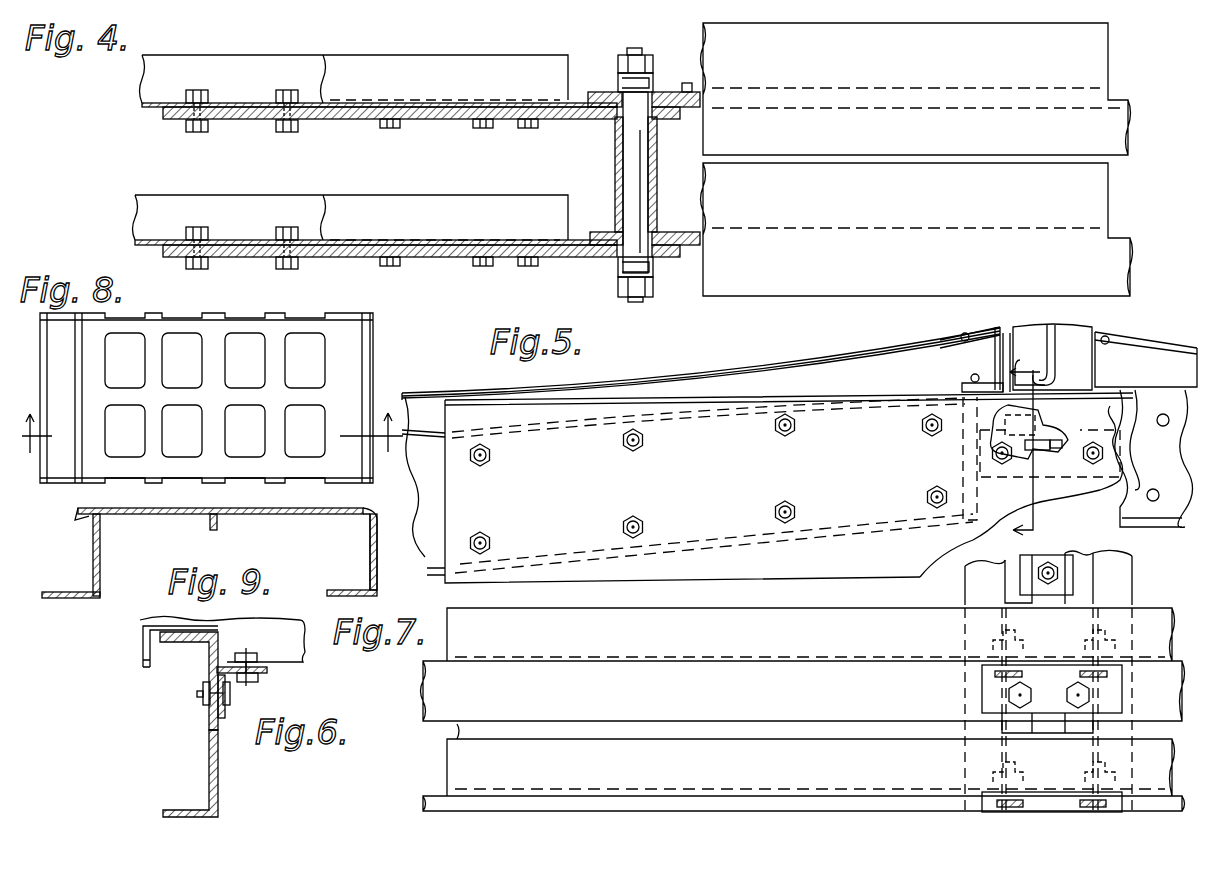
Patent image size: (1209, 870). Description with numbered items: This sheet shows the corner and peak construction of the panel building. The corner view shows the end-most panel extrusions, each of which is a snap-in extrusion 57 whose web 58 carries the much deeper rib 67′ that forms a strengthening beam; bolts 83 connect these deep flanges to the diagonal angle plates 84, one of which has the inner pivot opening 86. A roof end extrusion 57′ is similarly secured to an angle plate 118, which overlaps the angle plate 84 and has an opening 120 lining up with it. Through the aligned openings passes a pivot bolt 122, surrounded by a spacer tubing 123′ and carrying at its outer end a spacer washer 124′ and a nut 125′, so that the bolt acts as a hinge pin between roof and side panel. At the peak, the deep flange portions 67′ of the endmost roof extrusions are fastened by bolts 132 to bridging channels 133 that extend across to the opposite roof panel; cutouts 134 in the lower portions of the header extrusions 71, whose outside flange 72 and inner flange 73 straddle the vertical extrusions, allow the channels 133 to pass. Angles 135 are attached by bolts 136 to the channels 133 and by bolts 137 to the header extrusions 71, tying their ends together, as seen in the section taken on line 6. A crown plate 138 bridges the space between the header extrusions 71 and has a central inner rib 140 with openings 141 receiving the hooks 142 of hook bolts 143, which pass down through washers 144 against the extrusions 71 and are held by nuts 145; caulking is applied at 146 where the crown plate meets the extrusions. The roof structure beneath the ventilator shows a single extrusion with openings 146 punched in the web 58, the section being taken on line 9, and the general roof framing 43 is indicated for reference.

In FIG. 5, the section line 6— 6 is at (1033, 452).
In FIG. 8, the section line 9— 9 is at (211, 422).
In FIG. 8, the grate frame 43 is at (392, 343).
In FIG. 5, the grate frame 43 is at (742, 361).
In FIG. 5, the snap-in extrusion 57 is at (848, 360).
In FIG. 5, the end extrusion 57′ is at (433, 491).
In FIG. 8, the web 58 is at (178, 328).
In FIG. 9, the web 58 is at (212, 513).
In FIG. 5, the deep rib 67′ is at (435, 542).
In FIG. 6, the header extrusion 71 is at (289, 634).
In FIG. 5, the header extrusion 71 is at (1008, 345).
In FIG. 7, the header extrusion 71 is at (977, 582).
In FIG. 5, the outside flange 72 is at (997, 330).
In FIG. 5, the inner flange 73 is at (988, 386).
In FIG. 4, the bolt 83 is at (285, 90).
In FIG. 4, the angle plate 84 is at (580, 120).
In FIG. 4, the pivot opening 86 is at (620, 263).
In FIG. 4, the angle plate 118 is at (663, 92).
In FIG. 4, the opening 120 is at (616, 90).
In FIG. 4, the pivot bolt 122 is at (635, 197).
In FIG. 4, the spacer tubing 123′ is at (615, 170).
In FIG. 4, the spacer washer 124′ is at (660, 266).
In FIG. 4, the nut 125′ is at (650, 288).
In FIG. 5, the bolt 132 is at (490, 462).
In FIG. 6, the bridging channel 133 is at (209, 760).
In FIG. 5, the bridging channel 133 is at (789, 488).
In FIG. 7, the bridging channel 133 is at (803, 709).
In FIG. 6, the cutout 134 is at (163, 628).
In FIG. 5, the cutout 134 is at (1007, 427).
In FIG. 7, the cutout 134 is at (990, 672).
In FIG. 6, the angle 135 is at (263, 675).
In FIG. 5, the angle 135 is at (985, 465).
In FIG. 6, the bolt 136 is at (199, 693).
In FIG. 5, the bolt 136 is at (990, 452).
In FIG. 6, the bolt 137 is at (254, 658).
In FIG. 5, the bolt 137 is at (1135, 430).
In FIG. 5, the crown plate 138 is at (1052, 328).
In FIG. 5, the central inner rib 140 is at (1055, 357).
In FIG. 5, the opening 141 is at (1146, 353).
In FIG. 5, the hook 142 is at (1146, 361).
In FIG. 5, the hook bolt 143 is at (1050, 425).
In FIG. 7, the hook bolt 143 is at (1018, 585).
In FIG. 5, the washer 144 is at (1035, 452).
In FIG. 5, the nut 145 is at (1065, 450).
In FIG. 7, the nut 145 is at (1055, 576).
In FIG. 8, the caulking / openings 146 is at (300, 340).
In FIG. 9, the caulking / openings 146 is at (303, 513).
In FIG. 5, the caulking / openings 146 is at (1098, 323).